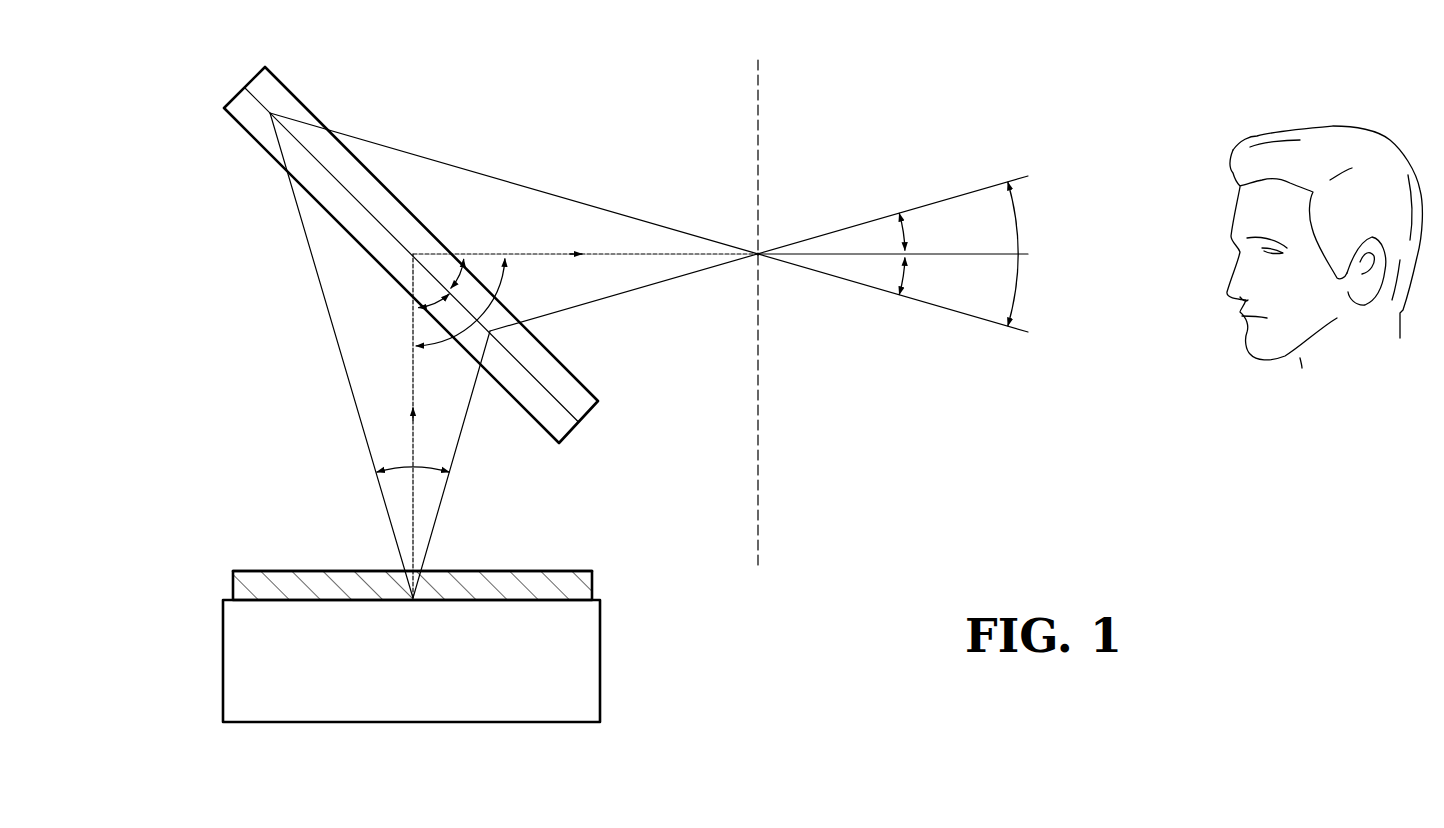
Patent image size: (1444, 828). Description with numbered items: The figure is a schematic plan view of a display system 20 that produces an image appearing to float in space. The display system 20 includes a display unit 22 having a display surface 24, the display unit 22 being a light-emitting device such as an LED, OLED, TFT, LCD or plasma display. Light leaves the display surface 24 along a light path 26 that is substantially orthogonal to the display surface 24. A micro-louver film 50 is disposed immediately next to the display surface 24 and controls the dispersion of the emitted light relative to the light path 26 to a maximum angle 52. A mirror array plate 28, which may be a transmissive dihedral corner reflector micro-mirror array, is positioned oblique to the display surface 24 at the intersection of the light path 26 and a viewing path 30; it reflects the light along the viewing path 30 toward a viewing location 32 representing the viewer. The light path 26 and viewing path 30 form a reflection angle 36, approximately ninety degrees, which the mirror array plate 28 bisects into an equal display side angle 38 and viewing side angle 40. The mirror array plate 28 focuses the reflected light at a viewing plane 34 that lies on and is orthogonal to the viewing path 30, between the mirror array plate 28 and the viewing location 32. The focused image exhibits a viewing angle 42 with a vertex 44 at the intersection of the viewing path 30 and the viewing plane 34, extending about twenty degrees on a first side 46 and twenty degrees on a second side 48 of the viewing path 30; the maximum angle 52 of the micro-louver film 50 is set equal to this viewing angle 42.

The display system 20 is at (207, 338).
The display unit 22 is at (600, 662).
The display surface 24 is at (540, 597).
The light path 26 is at (411, 316).
The mirror array plate 28 is at (297, 97).
The viewing path 30 is at (610, 253).
The viewing location 32 is at (1278, 130).
The viewing plane 34 is at (760, 112).
The reflection angle 36 is at (498, 285).
The display side angle 38 is at (433, 312).
The viewing side angle 40 is at (462, 278).
The viewing angle 42 is at (1015, 218).
The vertex 44 is at (762, 252).
The first side 46 is at (905, 232).
The second side 48 is at (905, 272).
The micro-louver film 50 is at (290, 571).
The maximum angle 52 is at (422, 465).